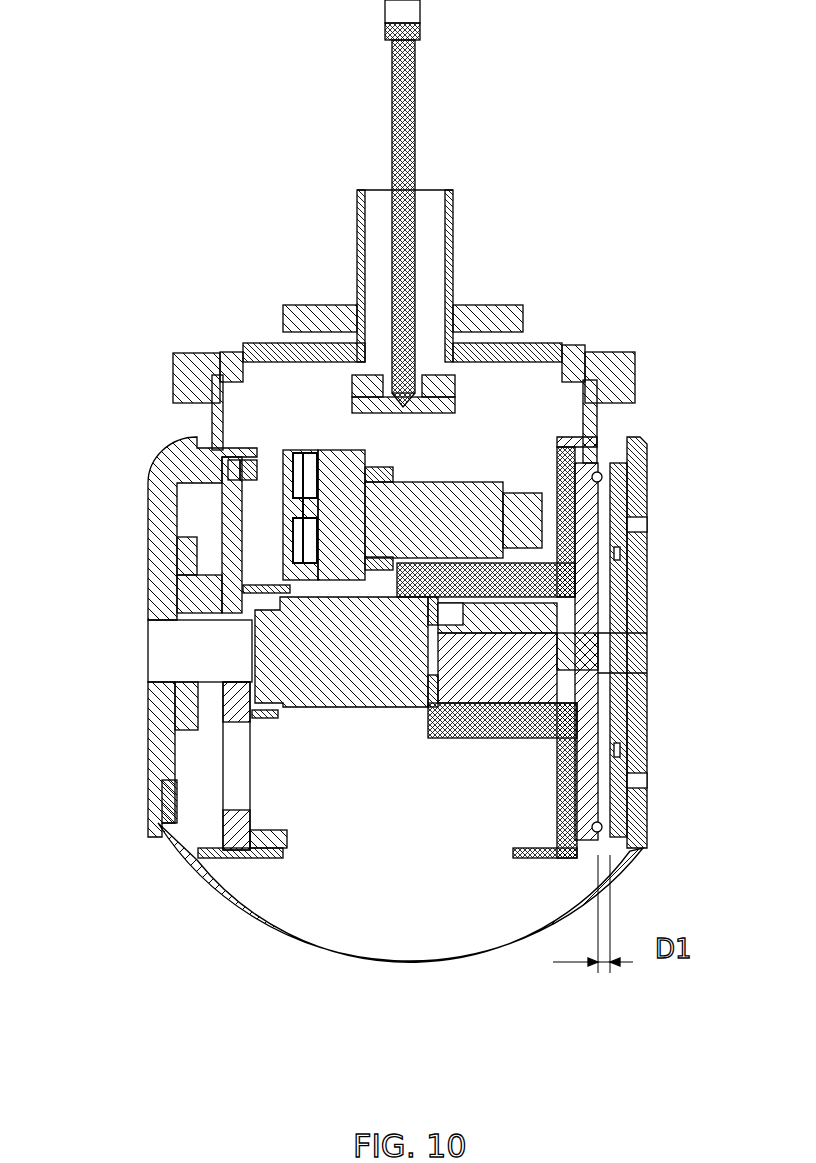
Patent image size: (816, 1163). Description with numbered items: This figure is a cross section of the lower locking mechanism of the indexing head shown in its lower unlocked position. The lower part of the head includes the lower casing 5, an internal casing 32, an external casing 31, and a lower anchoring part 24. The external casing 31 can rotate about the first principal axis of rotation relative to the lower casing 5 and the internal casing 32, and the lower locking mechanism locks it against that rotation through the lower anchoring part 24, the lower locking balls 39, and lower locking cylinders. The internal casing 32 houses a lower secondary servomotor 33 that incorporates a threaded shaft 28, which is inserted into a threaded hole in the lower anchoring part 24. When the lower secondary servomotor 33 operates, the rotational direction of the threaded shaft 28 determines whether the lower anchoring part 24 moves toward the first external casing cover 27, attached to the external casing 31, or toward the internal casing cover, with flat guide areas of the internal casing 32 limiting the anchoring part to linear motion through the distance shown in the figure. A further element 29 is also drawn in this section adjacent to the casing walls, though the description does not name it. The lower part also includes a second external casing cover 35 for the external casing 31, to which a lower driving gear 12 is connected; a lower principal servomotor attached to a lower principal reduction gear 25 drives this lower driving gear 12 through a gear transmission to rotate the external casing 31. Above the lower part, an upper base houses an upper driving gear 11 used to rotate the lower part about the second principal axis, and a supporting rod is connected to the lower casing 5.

The lower casing 5 is at (193, 390).
The upper driving gear 11 is at (520, 313).
The lower driving gear 12 is at (182, 560).
The lower anchoring part 24 is at (647, 625).
The lower principal reduction gear 25 is at (283, 463).
The first external casing cover 27 is at (647, 802).
The threaded shaft 28 is at (485, 522).
The support block 29 is at (647, 698).
The external casing 31 is at (275, 930).
The internal casing 32 is at (560, 585).
The lower secondary servomotor 33 is at (300, 680).
The second external casing cover 35 is at (160, 607).
The lower locking balls 39 is at (237, 603).